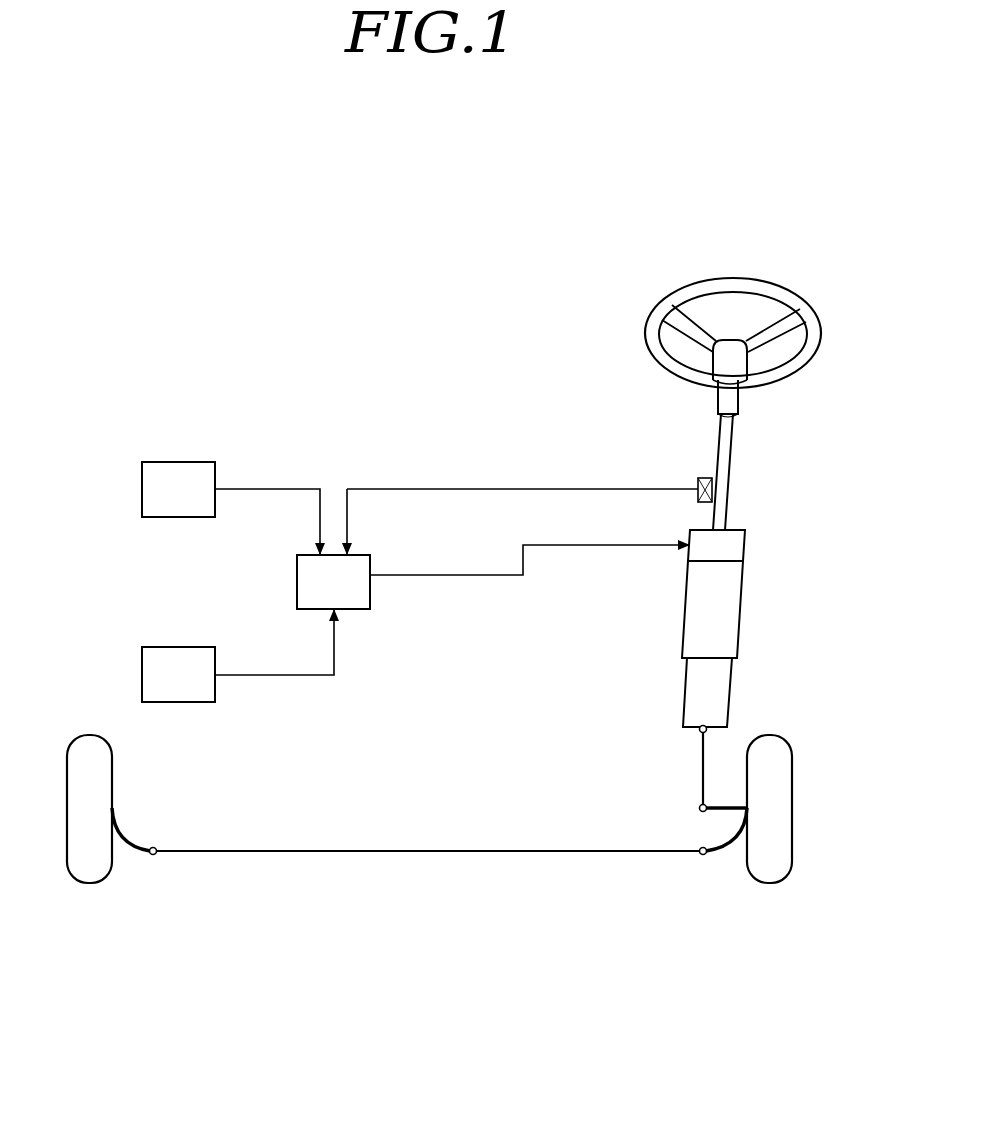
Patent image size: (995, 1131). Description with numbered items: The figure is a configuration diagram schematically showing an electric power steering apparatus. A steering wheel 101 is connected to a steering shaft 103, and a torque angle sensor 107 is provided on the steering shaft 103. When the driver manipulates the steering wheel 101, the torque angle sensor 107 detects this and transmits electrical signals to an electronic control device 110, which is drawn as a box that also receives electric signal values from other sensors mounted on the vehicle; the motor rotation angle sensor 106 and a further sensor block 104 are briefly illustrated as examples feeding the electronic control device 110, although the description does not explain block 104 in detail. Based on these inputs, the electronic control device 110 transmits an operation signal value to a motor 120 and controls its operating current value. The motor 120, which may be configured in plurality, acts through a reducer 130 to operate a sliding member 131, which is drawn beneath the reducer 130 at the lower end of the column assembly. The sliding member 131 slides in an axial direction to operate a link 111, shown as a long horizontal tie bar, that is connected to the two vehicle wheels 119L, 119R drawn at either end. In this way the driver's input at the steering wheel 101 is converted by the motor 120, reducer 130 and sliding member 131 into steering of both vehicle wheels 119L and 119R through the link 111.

The steering wheel 101 is at (733, 282).
The steering shaft 103 is at (728, 442).
The torque angle sensor 107 is at (702, 476).
The motor 120 is at (748, 550).
The reducer 130 is at (732, 608).
The sliding member 131 is at (718, 694).
The link 111 is at (454, 854).
The vehicle wheel 119L is at (88, 873).
The vehicle wheel 119R is at (761, 873).
The electronic control device 110 is at (297, 582).
The sensor input block 104 is at (177, 461).
The motor rotation angle sensor 106 is at (177, 646).